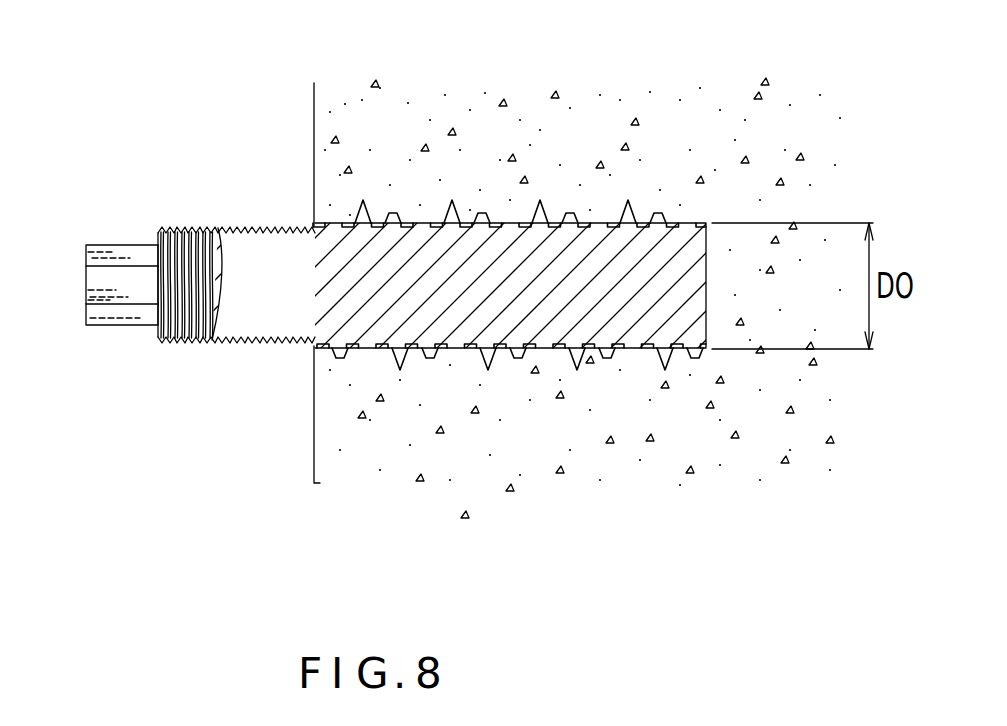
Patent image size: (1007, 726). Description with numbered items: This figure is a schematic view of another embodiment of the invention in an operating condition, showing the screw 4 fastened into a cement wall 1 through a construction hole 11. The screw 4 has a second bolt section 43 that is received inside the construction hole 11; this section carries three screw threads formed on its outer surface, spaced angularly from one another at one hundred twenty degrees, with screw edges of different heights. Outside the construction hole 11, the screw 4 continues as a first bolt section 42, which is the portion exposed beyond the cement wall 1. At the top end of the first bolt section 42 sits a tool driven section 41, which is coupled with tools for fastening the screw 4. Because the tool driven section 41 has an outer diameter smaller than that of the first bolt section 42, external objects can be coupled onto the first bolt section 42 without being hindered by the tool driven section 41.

The cement wall 1 is at (331, 93).
The screw 4 is at (243, 181).
The tool driven section 41 is at (120, 316).
The first bolt section 42 is at (253, 325).
The second bolt section 43 is at (545, 318).
The construction hole 11 is at (383, 350).